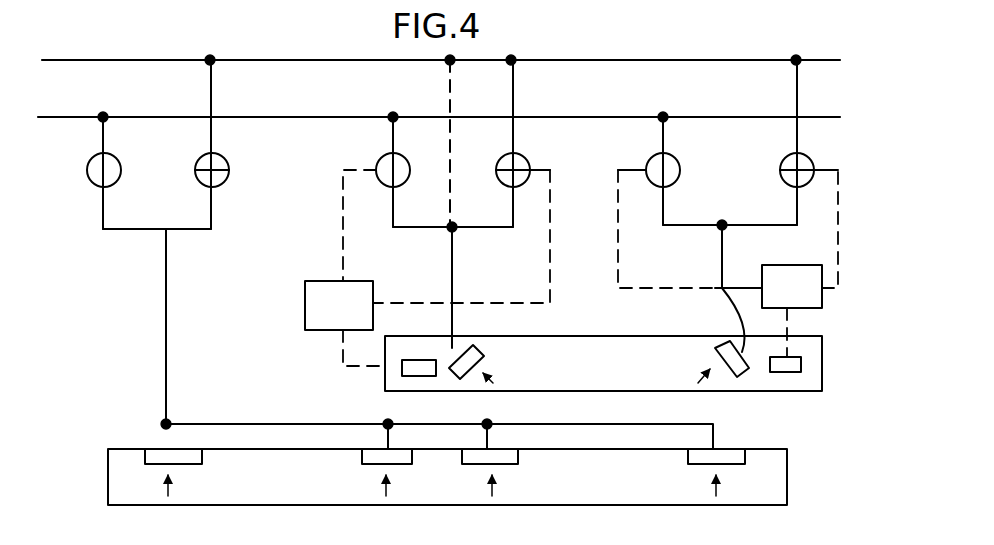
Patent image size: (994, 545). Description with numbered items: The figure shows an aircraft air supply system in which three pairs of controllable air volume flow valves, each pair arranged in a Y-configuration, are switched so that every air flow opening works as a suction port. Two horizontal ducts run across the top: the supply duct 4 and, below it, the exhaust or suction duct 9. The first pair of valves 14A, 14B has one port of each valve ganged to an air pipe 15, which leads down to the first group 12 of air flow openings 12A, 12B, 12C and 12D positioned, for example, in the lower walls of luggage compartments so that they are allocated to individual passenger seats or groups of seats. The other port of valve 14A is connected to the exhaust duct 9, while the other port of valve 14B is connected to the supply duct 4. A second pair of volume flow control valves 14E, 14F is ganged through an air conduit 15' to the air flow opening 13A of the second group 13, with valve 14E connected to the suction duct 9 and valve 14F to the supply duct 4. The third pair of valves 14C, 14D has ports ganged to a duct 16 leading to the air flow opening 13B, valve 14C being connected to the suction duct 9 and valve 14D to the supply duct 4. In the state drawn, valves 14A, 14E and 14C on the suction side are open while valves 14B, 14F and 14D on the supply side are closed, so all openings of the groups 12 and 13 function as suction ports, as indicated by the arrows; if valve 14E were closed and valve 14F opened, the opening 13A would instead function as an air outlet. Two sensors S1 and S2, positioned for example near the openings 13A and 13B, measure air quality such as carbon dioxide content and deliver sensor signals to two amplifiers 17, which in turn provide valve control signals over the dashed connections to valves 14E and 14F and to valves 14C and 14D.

The supply duct 4 is at (820, 56).
The exhaust duct 9 is at (810, 113).
The air volume flow valve 14A is at (94, 163).
The air volume flow valve 14B is at (222, 156).
The air volume flow valve 14C is at (670, 156).
The air volume flow valve 14D is at (805, 157).
The volume flow control valve 14E is at (387, 160).
The volume flow control valve 14F is at (520, 156).
The air pipe 15 is at (157, 326).
The air conduit 15' is at (453, 204).
The duct 16 is at (718, 250).
The amplifier 17 is at (305, 306).
The second group of air flow openings 13 is at (626, 378).
The air flow opening 13A is at (484, 357).
The air flow opening 13B is at (713, 348).
The sensor S1 is at (418, 376).
The sensor S2 is at (797, 365).
The first group of air flow openings 12 is at (470, 462).
The air flow opening 12A is at (200, 463).
The air flow opening 12B is at (364, 463).
The air flow opening 12C is at (517, 463).
The air flow opening 12D is at (690, 463).